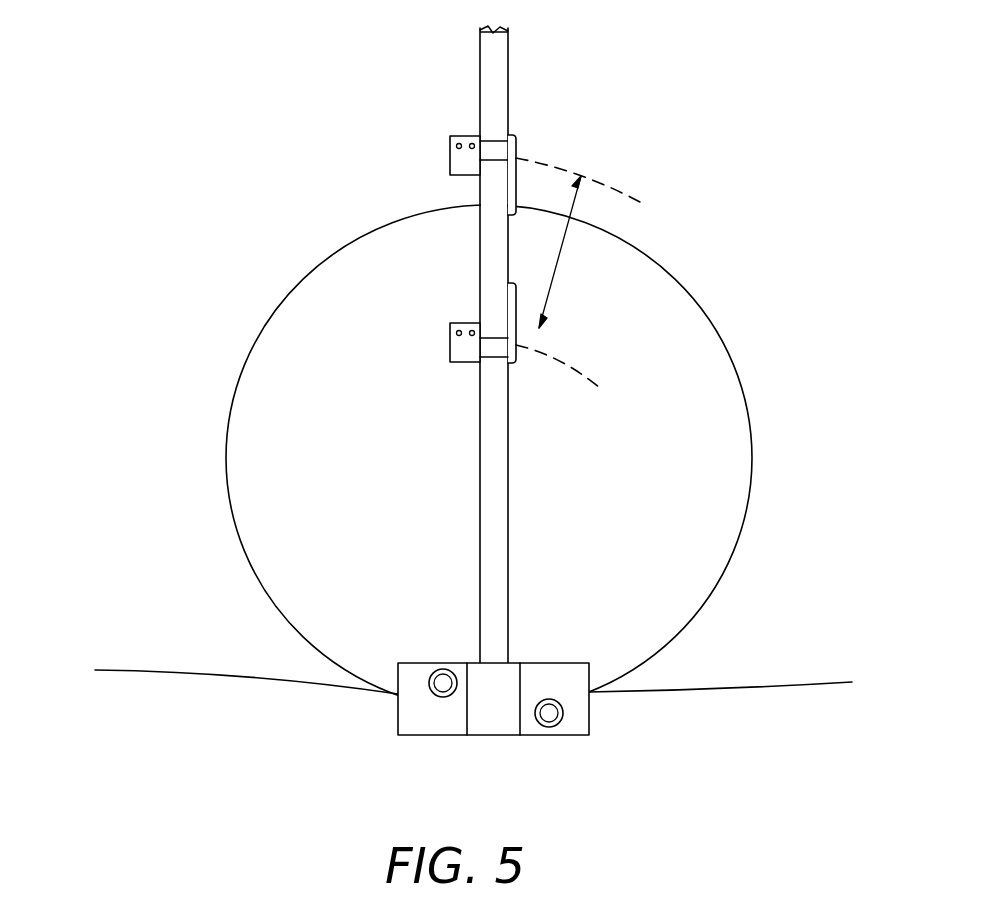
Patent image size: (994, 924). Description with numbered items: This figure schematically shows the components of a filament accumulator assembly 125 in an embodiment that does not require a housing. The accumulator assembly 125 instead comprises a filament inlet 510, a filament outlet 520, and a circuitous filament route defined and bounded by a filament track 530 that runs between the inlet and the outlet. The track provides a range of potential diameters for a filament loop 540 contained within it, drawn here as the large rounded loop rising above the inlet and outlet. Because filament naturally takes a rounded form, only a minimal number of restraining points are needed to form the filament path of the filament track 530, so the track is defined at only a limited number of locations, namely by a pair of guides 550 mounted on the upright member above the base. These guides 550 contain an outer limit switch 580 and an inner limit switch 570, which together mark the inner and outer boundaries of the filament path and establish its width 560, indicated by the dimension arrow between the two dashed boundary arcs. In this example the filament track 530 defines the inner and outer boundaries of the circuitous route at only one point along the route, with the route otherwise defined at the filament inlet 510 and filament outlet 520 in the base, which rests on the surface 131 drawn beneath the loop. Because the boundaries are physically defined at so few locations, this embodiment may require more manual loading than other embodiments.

The filament accumulator assembly 125 is at (218, 156).
The water surface 131 is at (806, 683).
The filament inlet 510 is at (608, 727).
The filament outlet 520 is at (398, 700).
The filament track 530 is at (625, 188).
The filament loop 540 is at (710, 320).
The guides 550 is at (516, 150).
The width 560 is at (563, 262).
The inner limit switch 570 is at (450, 333).
The outer limit switch 580 is at (450, 153).